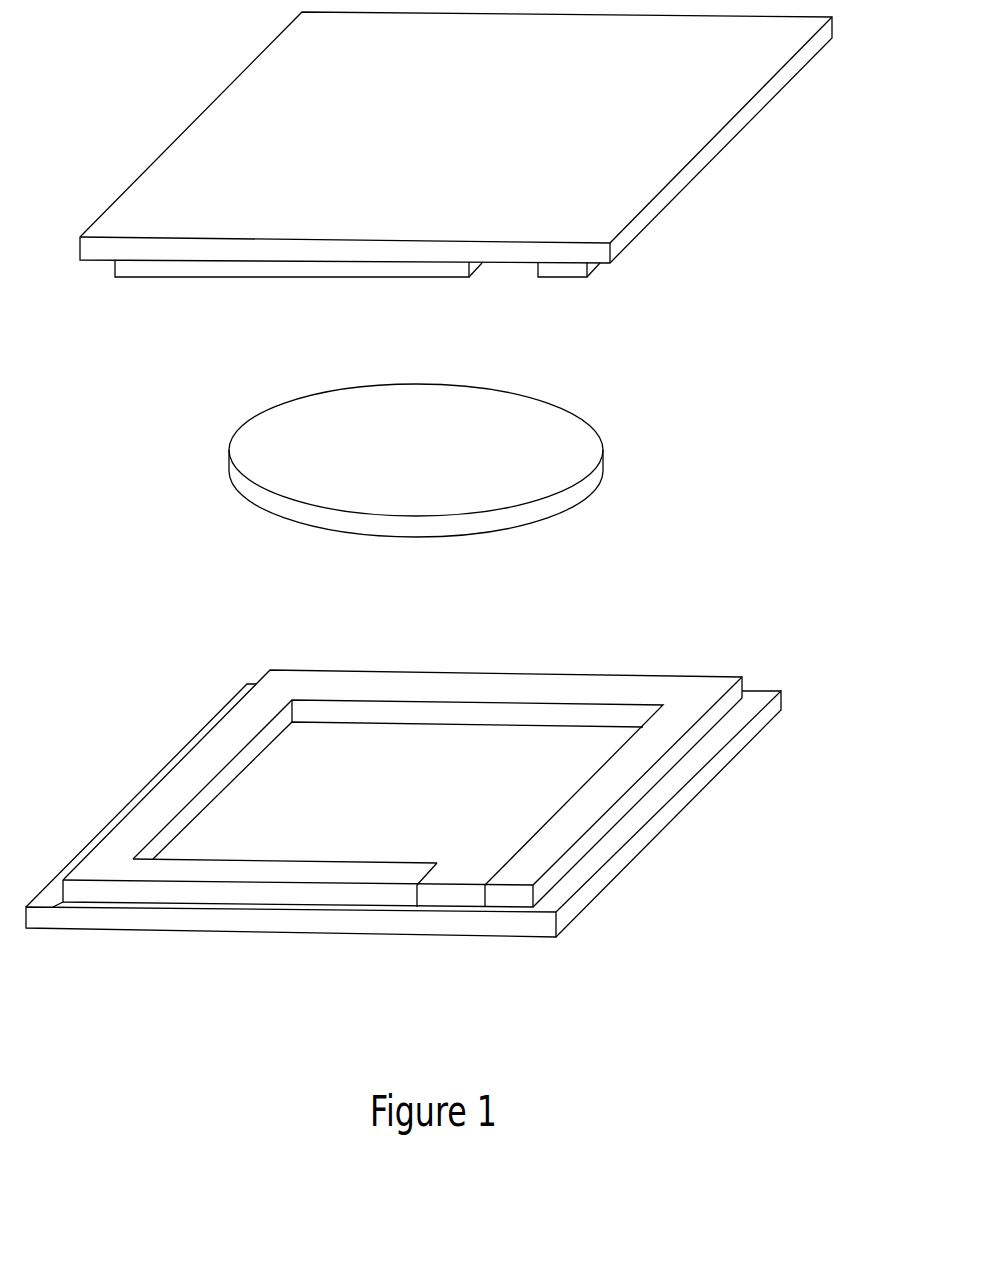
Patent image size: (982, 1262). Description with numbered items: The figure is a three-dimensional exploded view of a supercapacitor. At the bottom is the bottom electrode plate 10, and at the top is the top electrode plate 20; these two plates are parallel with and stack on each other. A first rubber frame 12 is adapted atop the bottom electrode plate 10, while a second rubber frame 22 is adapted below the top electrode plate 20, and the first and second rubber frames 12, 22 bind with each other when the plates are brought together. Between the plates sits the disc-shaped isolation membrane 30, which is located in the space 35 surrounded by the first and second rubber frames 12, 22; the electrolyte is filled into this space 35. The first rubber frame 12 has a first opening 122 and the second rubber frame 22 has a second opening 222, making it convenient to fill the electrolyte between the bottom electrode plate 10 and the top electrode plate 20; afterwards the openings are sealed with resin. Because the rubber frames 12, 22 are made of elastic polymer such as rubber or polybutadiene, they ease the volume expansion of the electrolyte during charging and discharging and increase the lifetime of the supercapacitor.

The bottom electrode plate 10 is at (703, 747).
The first rubber frame 12 is at (687, 690).
The first opening 122 is at (462, 893).
The top electrode plate 20 is at (693, 97).
The second rubber frame 22 is at (243, 268).
The second opening 222 is at (512, 265).
The isolation membrane 30 is at (592, 487).
The space 35 is at (262, 797).